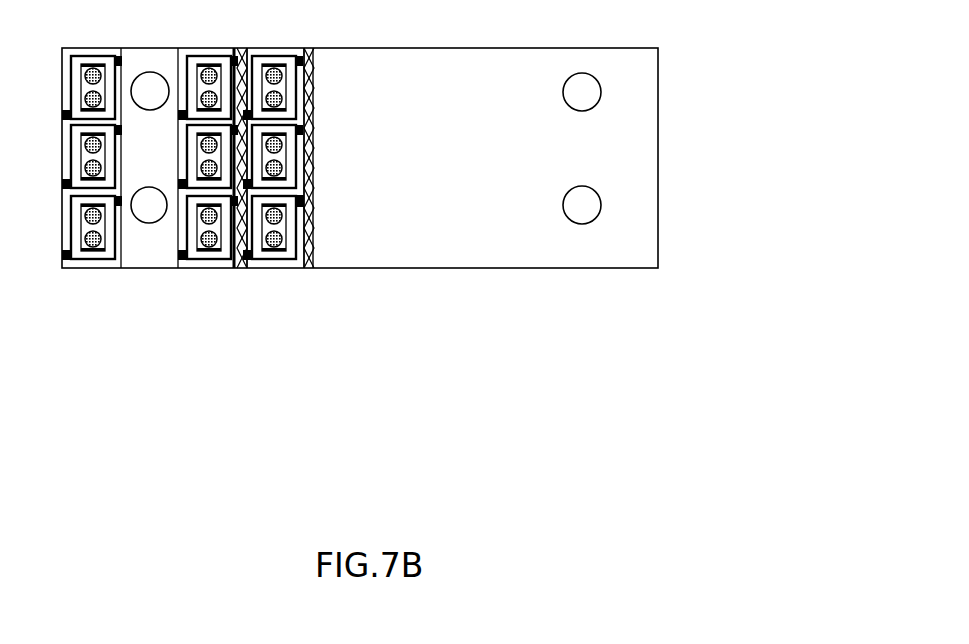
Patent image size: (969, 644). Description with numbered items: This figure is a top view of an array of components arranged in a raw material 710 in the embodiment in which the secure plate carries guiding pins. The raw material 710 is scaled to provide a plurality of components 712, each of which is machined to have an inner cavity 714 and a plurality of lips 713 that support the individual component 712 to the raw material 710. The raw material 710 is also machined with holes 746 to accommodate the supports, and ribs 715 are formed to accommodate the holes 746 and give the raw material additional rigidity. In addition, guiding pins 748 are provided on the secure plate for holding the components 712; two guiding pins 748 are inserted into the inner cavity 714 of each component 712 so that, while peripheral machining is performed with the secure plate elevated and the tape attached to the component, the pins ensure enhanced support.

The raw material 710 is at (634, 270).
The component 712 is at (153, 261).
The lip 713 is at (261, 254).
The inner cavity 714 is at (98, 233).
The rib 715 is at (153, 213).
The hole 746 is at (141, 247).
The guiding pin 748 is at (303, 205).